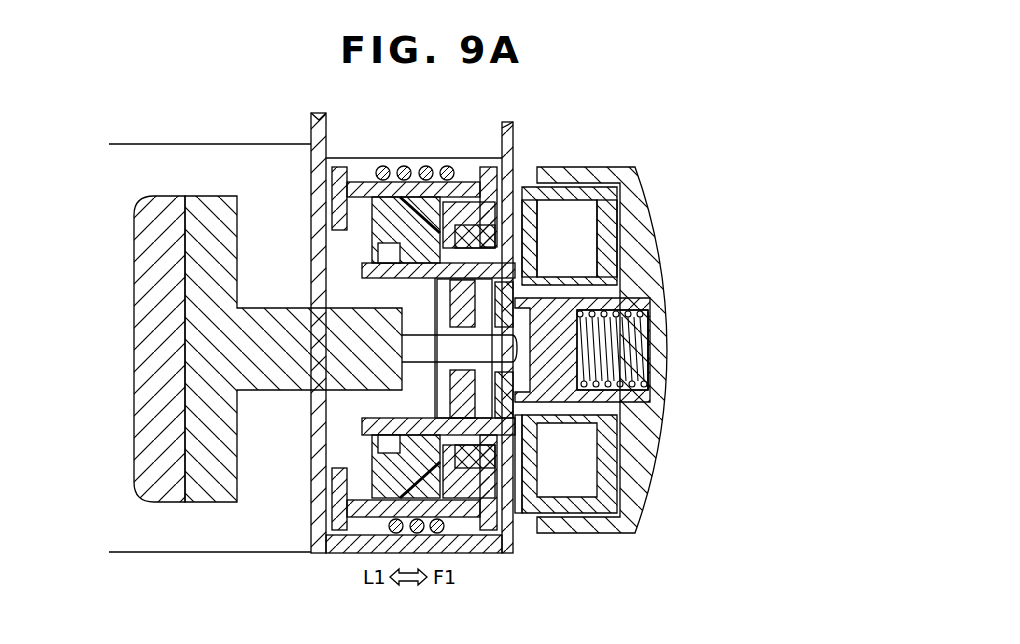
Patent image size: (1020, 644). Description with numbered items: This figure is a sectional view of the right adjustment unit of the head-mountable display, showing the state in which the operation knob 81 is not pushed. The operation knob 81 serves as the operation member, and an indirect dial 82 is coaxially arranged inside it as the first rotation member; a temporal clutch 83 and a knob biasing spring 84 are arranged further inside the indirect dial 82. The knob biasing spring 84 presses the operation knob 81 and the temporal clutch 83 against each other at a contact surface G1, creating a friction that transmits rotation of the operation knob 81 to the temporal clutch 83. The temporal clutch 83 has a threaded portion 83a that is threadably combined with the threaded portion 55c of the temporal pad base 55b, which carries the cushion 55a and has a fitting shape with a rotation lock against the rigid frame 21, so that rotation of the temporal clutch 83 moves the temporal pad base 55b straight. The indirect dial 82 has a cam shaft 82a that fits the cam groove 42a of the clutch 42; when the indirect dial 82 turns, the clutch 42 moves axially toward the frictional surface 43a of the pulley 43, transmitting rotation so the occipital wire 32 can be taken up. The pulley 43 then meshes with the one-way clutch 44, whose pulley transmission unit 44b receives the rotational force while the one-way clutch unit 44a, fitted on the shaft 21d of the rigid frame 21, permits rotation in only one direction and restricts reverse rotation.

The rigid frame 21 is at (510, 142).
The shaft 21d is at (532, 500).
The occipital wire 32 is at (383, 166).
The clutch 42 is at (400, 212).
The cam groove 42a is at (417, 443).
The pulley 43 is at (497, 182).
The frictional surface 43a is at (443, 172).
The one-way clutch 44 is at (656, 219).
The one-way clutch unit 44a is at (535, 238).
The pulley transmission unit 44b is at (598, 203).
The cushion 55a is at (158, 322).
The temporal pad base 55b is at (208, 267).
The threaded portion 55c is at (437, 347).
The operation knob 81 is at (650, 452).
The indirect dial 82 is at (607, 492).
The cam shaft 82a is at (368, 478).
The temporal clutch 83 is at (560, 307).
The threaded portion 83a is at (605, 345).
The knob biasing spring 84 is at (615, 376).
The contact surface G1 is at (660, 320).